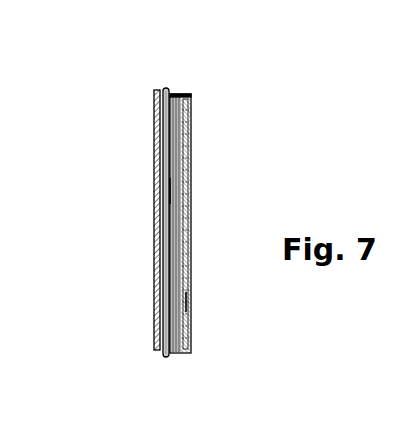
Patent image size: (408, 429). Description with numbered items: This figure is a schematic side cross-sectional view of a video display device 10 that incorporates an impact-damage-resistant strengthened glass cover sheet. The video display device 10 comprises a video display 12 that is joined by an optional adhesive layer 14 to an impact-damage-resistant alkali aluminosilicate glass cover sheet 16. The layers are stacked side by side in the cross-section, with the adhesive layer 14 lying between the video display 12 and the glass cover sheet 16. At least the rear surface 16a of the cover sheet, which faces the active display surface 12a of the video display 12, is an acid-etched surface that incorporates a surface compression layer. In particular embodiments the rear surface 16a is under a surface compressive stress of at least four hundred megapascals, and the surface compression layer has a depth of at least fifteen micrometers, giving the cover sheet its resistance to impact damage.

The video display device 10 is at (88, 81).
The video display 12 is at (186, 101).
The active display surface 12a is at (171, 200).
The adhesive layer 14 is at (165, 153).
The glass cover sheet 16 is at (160, 252).
The rear surface 16a is at (186, 302).